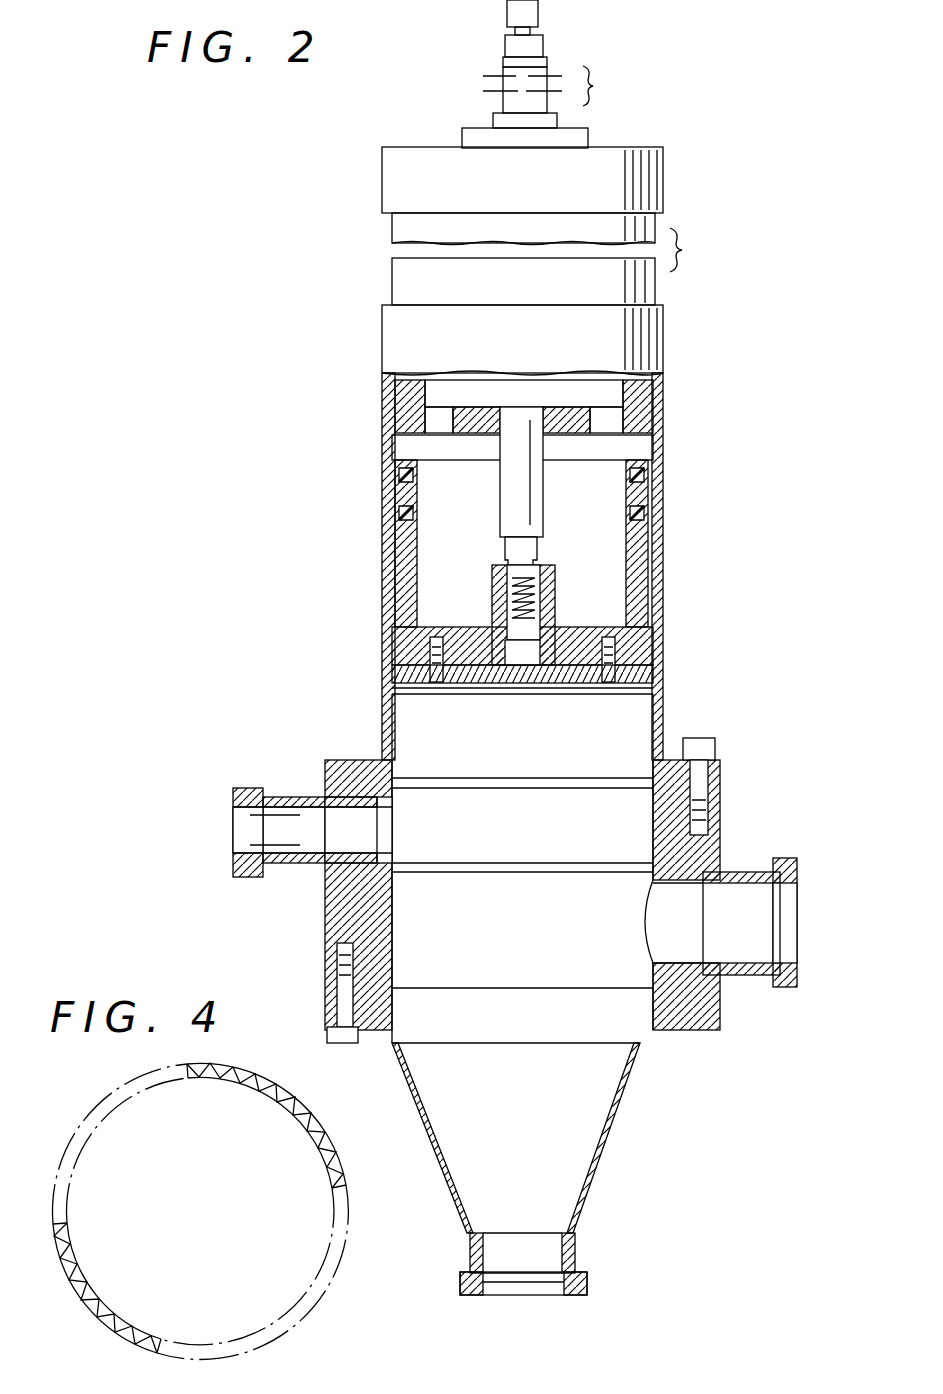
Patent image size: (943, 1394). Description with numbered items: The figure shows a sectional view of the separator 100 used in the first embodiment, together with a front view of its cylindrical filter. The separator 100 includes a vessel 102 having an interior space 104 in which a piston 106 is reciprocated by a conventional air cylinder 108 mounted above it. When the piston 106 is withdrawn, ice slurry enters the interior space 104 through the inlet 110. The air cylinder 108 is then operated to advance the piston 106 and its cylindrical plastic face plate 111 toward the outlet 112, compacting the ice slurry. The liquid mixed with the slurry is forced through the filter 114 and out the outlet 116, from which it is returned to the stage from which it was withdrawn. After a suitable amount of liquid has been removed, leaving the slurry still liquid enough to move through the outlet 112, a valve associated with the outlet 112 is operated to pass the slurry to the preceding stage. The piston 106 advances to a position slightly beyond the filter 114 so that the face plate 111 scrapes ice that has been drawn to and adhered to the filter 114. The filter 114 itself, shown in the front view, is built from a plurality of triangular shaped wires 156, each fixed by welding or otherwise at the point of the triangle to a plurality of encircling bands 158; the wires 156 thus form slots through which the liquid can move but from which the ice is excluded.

In FIG. 2, the separator 100 is at (798, 418).
In FIG. 2, the vessel 102 is at (712, 760).
In FIG. 2, the interior space 104 is at (555, 768).
In FIG. 2, the piston 106 is at (632, 640).
In FIG. 2, the air cylinder 108 is at (380, 200).
In FIG. 2, the inlet 110 is at (783, 933).
In FIG. 2, the cylindrical plastic face plate 111 is at (505, 695).
In FIG. 2, the outlet 112 is at (533, 1273).
In FIG. 2, the filter 114 is at (467, 843).
In FIG. 2, the outlet 116 is at (233, 820).
In FIG. 4, the triangular shaped wires 156 is at (318, 1097).
In FIG. 4, the encircling bands 158 is at (330, 1142).